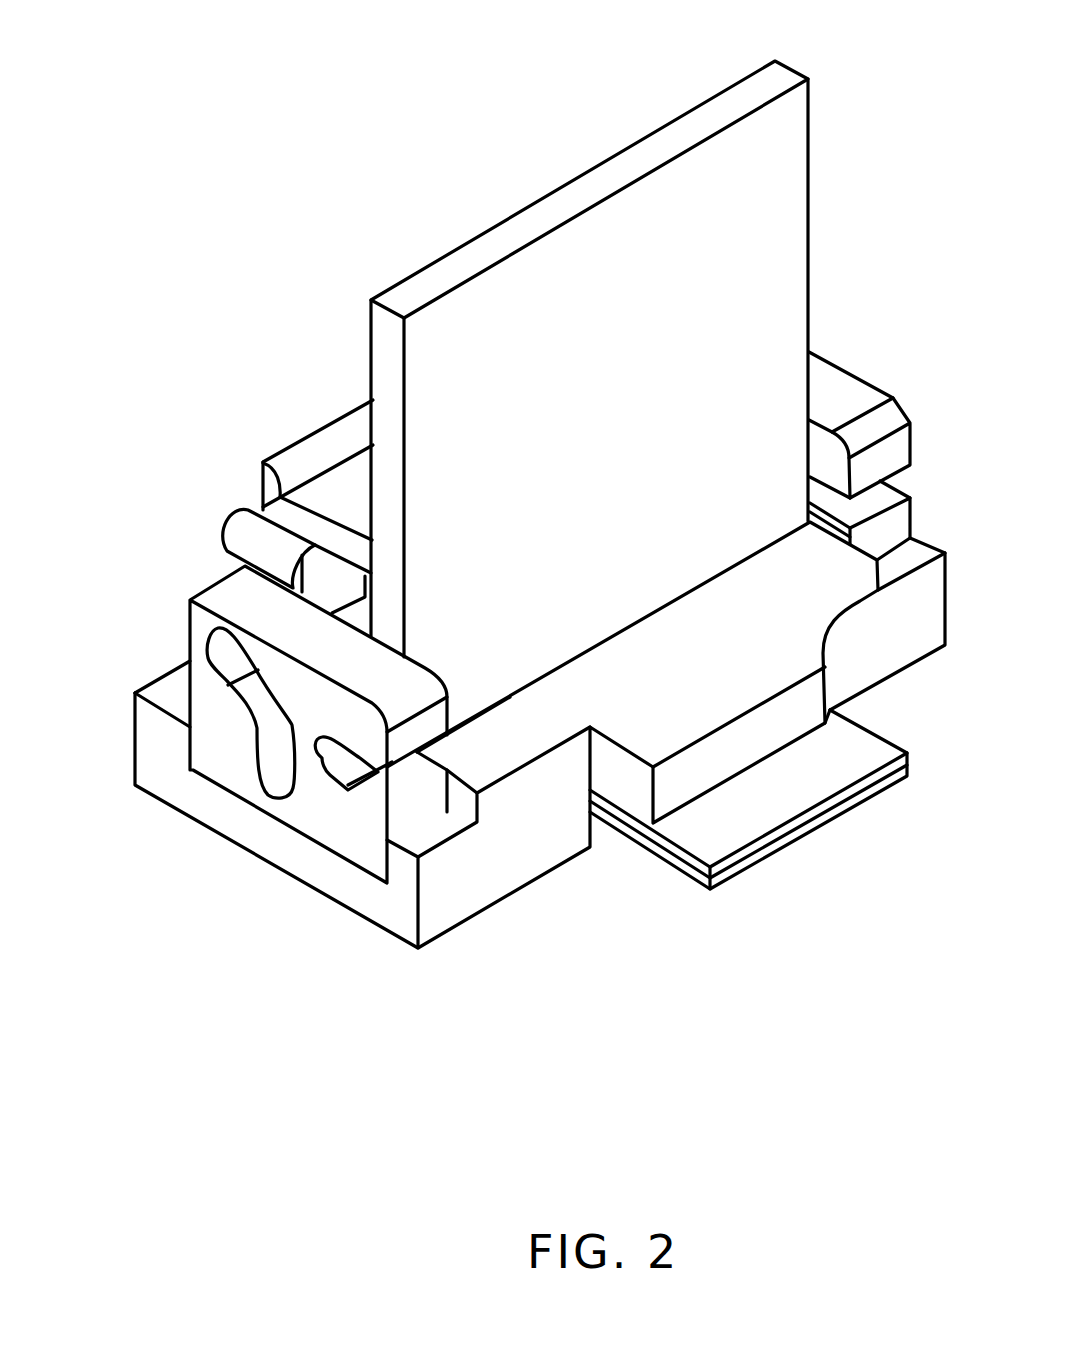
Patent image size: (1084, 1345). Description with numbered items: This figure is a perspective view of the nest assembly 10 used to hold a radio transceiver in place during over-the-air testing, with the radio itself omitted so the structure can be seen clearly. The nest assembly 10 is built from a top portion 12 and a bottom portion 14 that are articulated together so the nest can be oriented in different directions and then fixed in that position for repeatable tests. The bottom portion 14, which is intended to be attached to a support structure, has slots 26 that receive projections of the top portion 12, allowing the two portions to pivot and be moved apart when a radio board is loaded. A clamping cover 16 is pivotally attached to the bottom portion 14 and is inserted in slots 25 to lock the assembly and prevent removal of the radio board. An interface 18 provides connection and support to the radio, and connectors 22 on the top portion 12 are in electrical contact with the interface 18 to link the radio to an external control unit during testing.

The nest assembly 10 is at (298, 208).
The top portion 12 is at (478, 885).
The bottom portion 14 is at (862, 394).
The clamping cover 16 is at (795, 130).
The interface 18 is at (860, 798).
The connectors 22 is at (222, 530).
The slots 25 is at (380, 780).
The slots 26 is at (226, 650).